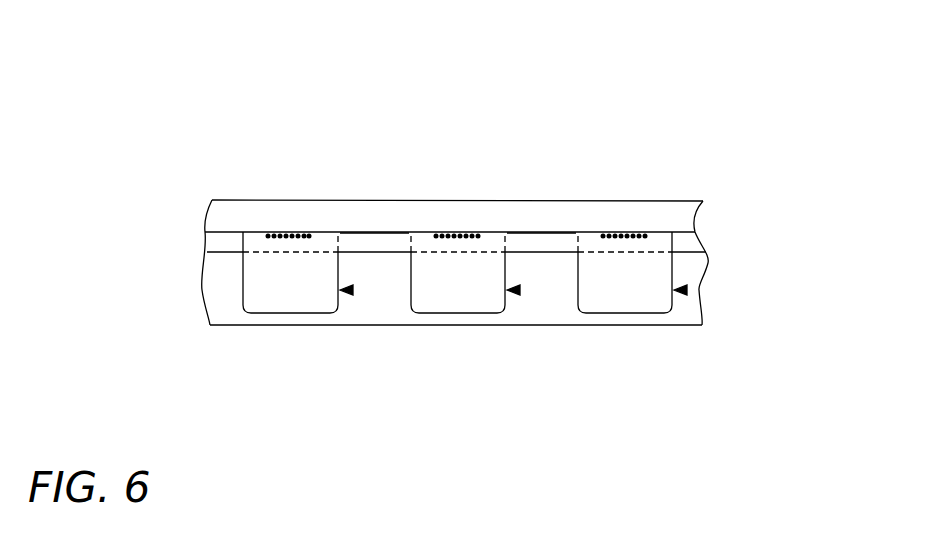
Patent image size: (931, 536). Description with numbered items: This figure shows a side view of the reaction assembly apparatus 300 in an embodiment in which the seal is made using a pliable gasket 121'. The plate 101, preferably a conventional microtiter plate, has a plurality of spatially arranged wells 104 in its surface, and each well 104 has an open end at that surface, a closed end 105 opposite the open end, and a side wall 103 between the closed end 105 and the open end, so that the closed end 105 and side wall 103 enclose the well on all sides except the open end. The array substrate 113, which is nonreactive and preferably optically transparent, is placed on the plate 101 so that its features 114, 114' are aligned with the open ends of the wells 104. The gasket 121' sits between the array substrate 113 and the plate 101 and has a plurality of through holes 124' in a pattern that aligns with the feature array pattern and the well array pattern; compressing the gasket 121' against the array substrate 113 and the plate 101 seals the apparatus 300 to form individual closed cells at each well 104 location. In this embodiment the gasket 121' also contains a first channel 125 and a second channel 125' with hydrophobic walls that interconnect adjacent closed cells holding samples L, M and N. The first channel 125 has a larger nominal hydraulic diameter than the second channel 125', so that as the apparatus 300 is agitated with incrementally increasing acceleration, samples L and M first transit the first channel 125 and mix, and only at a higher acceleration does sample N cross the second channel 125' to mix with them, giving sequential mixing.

The reaction assembly apparatus 300 is at (220, 75).
The plate 101 is at (703, 263).
The array substrate 113 is at (695, 214).
The gasket 121' is at (414, 249).
The first channel 125 is at (374, 201).
The second channel 125' is at (541, 200).
The side wall 103 is at (243, 292).
The well 104 is at (272, 305).
The closed end 105 is at (457, 313).
The through hole 124' is at (489, 187).
The feature 114 is at (664, 203).
The feature 114' is at (624, 236).